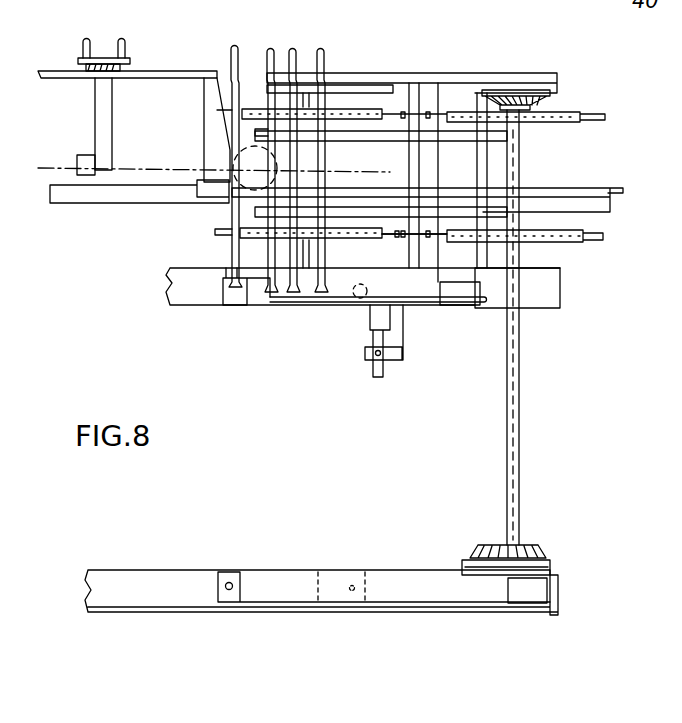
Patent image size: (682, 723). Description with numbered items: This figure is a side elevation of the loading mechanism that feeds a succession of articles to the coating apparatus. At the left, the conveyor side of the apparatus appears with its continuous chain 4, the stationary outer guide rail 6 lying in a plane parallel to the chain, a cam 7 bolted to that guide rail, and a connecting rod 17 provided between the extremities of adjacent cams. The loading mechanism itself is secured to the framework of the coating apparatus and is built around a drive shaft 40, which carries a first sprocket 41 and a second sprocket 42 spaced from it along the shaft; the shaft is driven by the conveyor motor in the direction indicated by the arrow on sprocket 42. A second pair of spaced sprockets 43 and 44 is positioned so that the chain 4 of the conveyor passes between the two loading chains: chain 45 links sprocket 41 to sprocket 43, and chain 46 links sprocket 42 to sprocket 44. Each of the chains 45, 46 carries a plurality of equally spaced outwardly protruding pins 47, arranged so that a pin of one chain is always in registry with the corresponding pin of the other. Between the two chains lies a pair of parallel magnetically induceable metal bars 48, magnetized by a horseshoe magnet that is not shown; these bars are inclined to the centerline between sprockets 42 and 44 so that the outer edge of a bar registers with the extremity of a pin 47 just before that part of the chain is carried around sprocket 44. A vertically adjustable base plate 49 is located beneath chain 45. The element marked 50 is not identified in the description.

The chain 4 is at (58, 168).
The outer guide rail 6 is at (83, 201).
The cam 7 is at (209, 88).
The connecting rod 17 is at (159, 71).
The drive shaft 40 is at (520, 427).
The first sprocket 41 is at (567, 245).
The second sprocket 42 is at (572, 126).
The sprocket 43 is at (250, 236).
The sprocket 44 is at (251, 103).
The chain 45 is at (405, 237).
The chain 46 is at (405, 116).
The pins 47 is at (597, 112).
The magnetically induceable metal bars 48 is at (493, 213).
The base plate 49 is at (428, 305).
The stud 50 is at (82, 43).